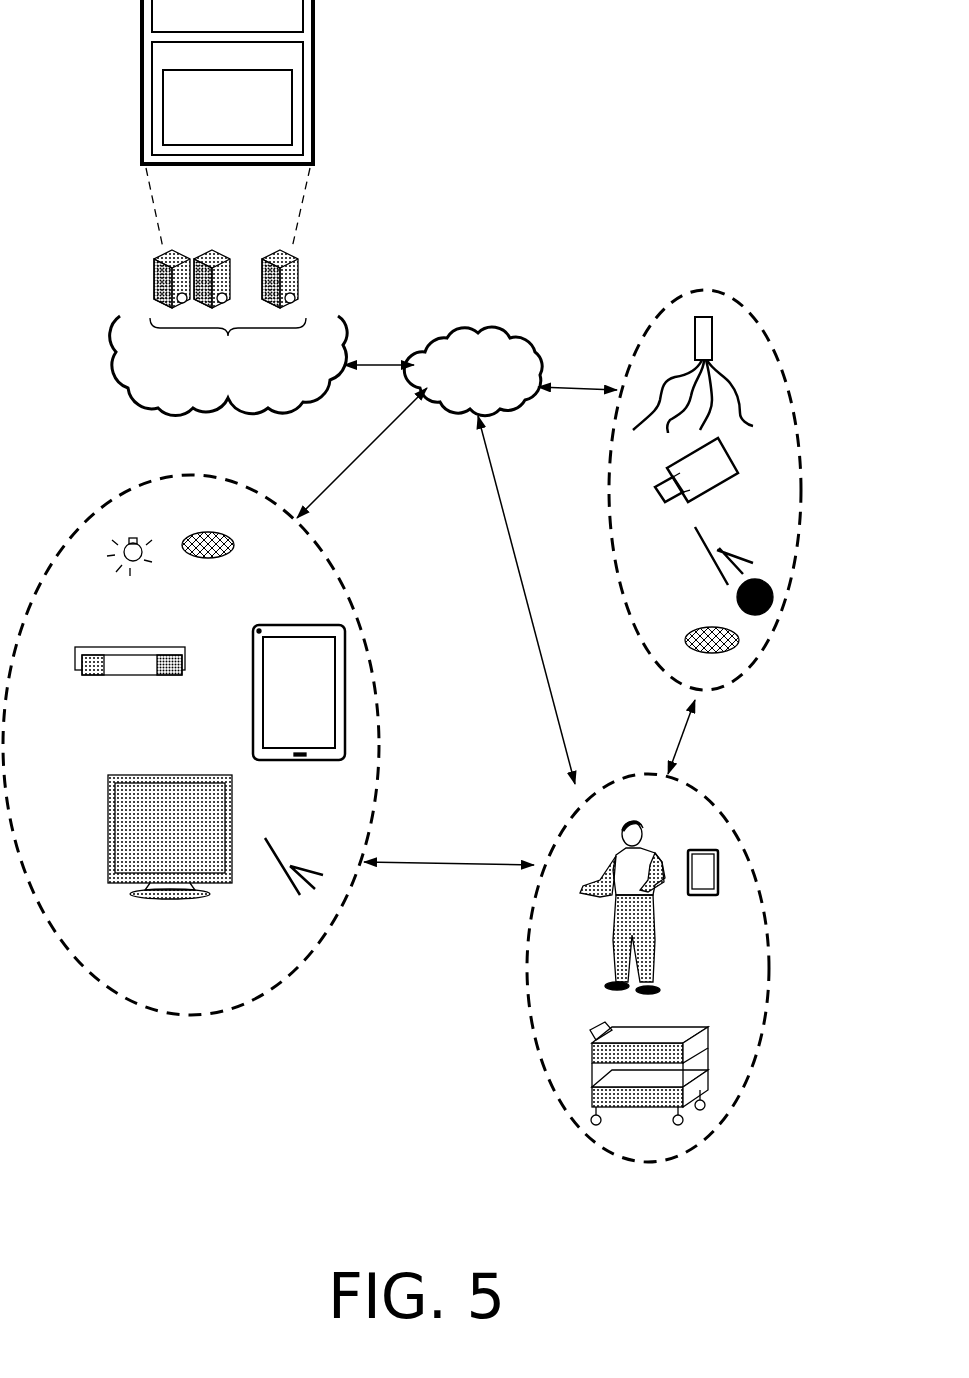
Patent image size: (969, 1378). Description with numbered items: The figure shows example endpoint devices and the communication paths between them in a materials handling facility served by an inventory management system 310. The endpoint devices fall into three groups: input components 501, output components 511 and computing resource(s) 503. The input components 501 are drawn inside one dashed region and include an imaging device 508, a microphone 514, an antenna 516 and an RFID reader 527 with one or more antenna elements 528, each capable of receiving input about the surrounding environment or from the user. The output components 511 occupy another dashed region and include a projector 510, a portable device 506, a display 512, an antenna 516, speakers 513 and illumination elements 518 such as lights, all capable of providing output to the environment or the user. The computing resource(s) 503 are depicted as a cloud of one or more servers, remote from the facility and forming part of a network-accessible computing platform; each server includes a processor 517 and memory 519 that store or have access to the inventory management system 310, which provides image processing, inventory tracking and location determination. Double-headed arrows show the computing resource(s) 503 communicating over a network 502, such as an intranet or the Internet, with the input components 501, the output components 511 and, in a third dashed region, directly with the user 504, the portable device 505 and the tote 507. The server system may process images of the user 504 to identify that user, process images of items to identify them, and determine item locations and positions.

The processor 517 is at (227, 16).
The memory 519 is at (227, 98).
The inventory management system 310 is at (227, 107).
The computing resource(s) 503 is at (226, 208).
The network 502 is at (473, 371).
The input components 501 is at (647, 333).
The RFID reader 527 is at (703, 317).
The antenna elements 528 is at (732, 382).
The imaging device 508 is at (655, 497).
The antenna 516 is at (725, 580).
The microphone 514 is at (712, 652).
The output components 511 is at (125, 995).
The illumination elements 518 is at (126, 540).
The speakers 513 is at (205, 558).
The projector 510 is at (145, 675).
The portable device 506 is at (330, 765).
The display 512 is at (182, 897).
The user 504 is at (612, 988).
The portable device 505 is at (715, 855).
The tote 507 is at (590, 1088).